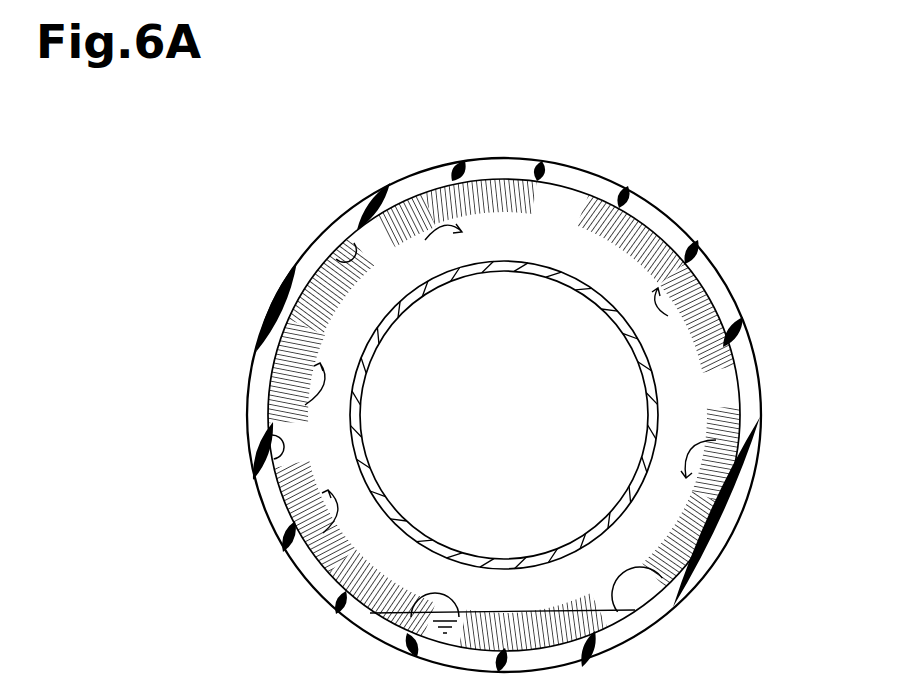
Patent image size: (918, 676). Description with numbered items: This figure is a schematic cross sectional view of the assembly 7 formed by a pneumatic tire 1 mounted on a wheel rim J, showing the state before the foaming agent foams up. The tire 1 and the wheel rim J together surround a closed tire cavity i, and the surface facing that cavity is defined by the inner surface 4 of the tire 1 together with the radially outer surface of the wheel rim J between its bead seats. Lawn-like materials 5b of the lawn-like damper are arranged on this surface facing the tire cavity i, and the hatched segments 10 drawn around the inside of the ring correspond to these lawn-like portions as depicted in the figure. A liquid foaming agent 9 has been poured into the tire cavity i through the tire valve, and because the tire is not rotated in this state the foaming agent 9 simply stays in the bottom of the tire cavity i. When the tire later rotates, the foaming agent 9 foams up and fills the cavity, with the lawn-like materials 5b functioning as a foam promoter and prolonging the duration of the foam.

The pneumatic tire 1 is at (607, 173).
The wheel rim J is at (607, 303).
The assembly 7 is at (748, 164).
The inner surface 4 is at (280, 440).
The lawn-like materials 5b is at (350, 247).
The coils 10 is at (403, 207).
The foaming agent 9 is at (370, 613).
The tire cavity i is at (693, 451).